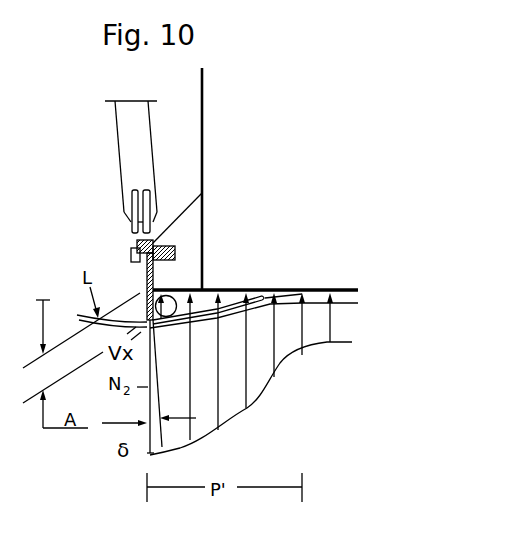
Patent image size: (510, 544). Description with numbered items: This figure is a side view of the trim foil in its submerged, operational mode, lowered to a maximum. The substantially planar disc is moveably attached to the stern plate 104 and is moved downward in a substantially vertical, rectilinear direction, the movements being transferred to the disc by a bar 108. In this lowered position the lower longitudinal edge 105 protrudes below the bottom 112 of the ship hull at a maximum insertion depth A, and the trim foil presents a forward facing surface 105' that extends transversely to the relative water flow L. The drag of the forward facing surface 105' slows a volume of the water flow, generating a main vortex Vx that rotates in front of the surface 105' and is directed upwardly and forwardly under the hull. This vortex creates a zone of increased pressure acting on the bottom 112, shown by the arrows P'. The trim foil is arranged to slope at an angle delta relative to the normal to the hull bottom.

The stern plate 104 is at (202, 162).
The lower longitudinal edge 105 is at (137, 280).
The forward facing surface 105' is at (181, 324).
The bar 108 is at (133, 160).
The bottom of the ship hull 112 is at (283, 288).